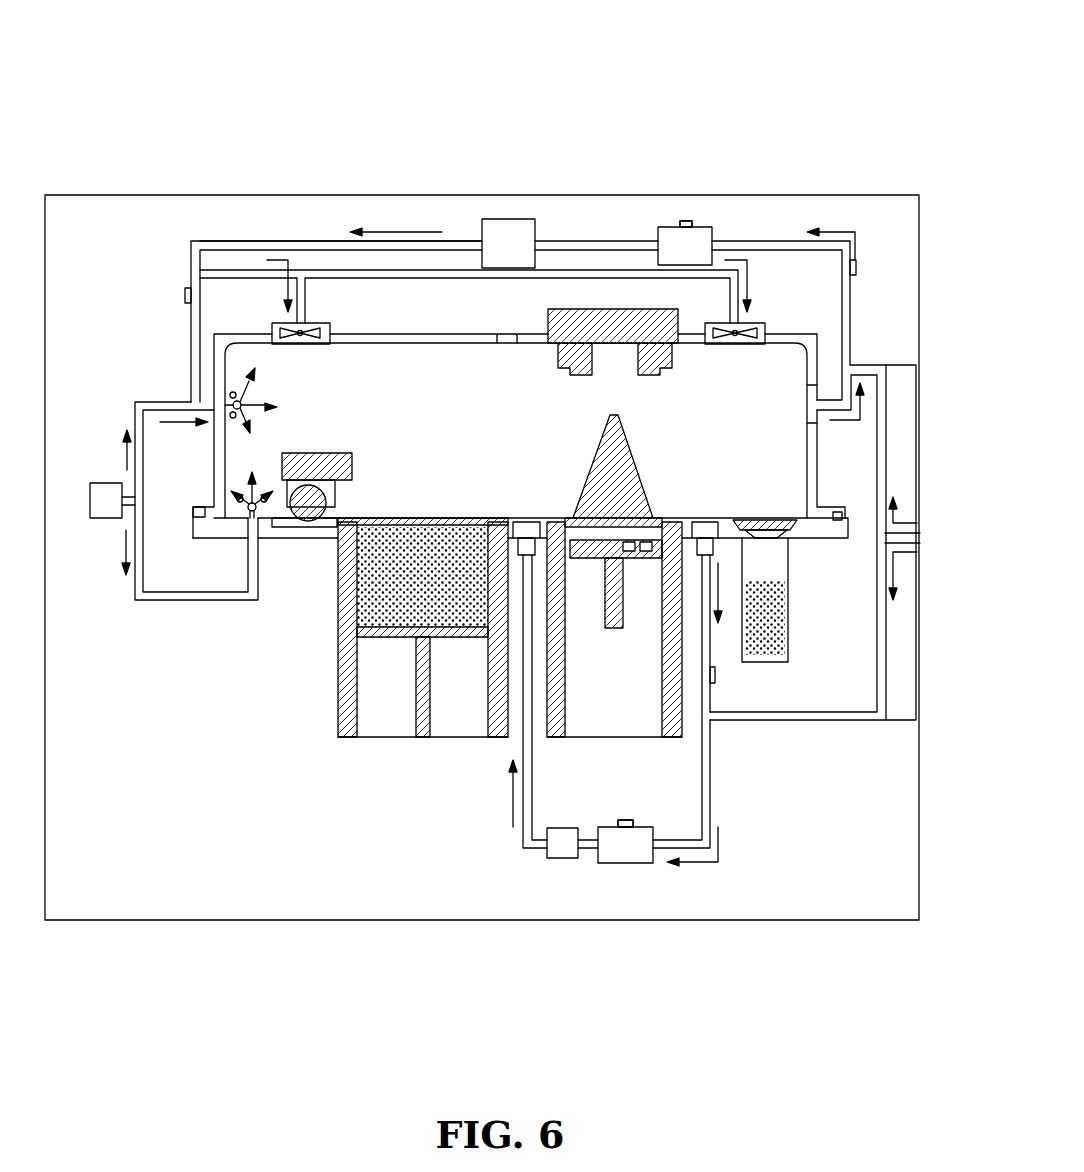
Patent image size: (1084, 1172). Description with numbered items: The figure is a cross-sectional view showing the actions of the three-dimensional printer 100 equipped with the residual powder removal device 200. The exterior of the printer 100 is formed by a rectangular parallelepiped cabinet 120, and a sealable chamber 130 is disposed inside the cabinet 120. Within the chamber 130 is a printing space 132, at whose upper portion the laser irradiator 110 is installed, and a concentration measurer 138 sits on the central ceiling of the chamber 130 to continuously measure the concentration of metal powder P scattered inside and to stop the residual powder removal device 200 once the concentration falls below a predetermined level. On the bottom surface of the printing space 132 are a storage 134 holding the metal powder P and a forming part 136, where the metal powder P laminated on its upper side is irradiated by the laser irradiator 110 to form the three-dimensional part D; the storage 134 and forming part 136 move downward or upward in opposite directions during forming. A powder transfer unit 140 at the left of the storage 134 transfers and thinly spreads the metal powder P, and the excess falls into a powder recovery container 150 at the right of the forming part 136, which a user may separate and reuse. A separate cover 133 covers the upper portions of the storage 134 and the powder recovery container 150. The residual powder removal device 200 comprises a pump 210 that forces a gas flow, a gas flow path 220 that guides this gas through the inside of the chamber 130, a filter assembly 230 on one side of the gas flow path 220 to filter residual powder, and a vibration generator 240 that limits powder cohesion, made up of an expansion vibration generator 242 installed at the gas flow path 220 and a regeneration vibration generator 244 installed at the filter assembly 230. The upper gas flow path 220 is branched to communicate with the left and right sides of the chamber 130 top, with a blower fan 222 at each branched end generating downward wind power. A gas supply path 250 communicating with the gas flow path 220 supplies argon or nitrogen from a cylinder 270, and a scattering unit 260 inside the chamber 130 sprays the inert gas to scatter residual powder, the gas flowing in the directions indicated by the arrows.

The 3D printer 100 is at (862, 150).
The laser irradiator 110 is at (628, 358).
The cabinet 120 is at (905, 195).
The chamber 130 is at (818, 450).
The printing space 132 is at (466, 447).
The cover 133 is at (757, 520).
The storage 134 is at (386, 646).
The forming part 136 is at (580, 720).
The concentration measurer 138 is at (505, 343).
The powder transfer unit 140 is at (328, 450).
The powder recovery container 150 is at (788, 630).
The residual powder removal device 200 is at (640, 140).
The pump 210 is at (500, 219).
The gas flow path 220 is at (325, 241).
The blower fan 222 is at (327, 330).
The filter assembly 230 is at (665, 227).
The vibration generator 240 is at (810, 66).
The expansion vibration generator 242 is at (188, 303).
The regeneration vibration generator 244 is at (688, 222).
The gas supply path 250 is at (136, 400).
The scattering unit 260 is at (240, 400).
The cylinder 270 is at (103, 541).
The 3D part D is at (595, 455).
The metal powder P is at (370, 605).